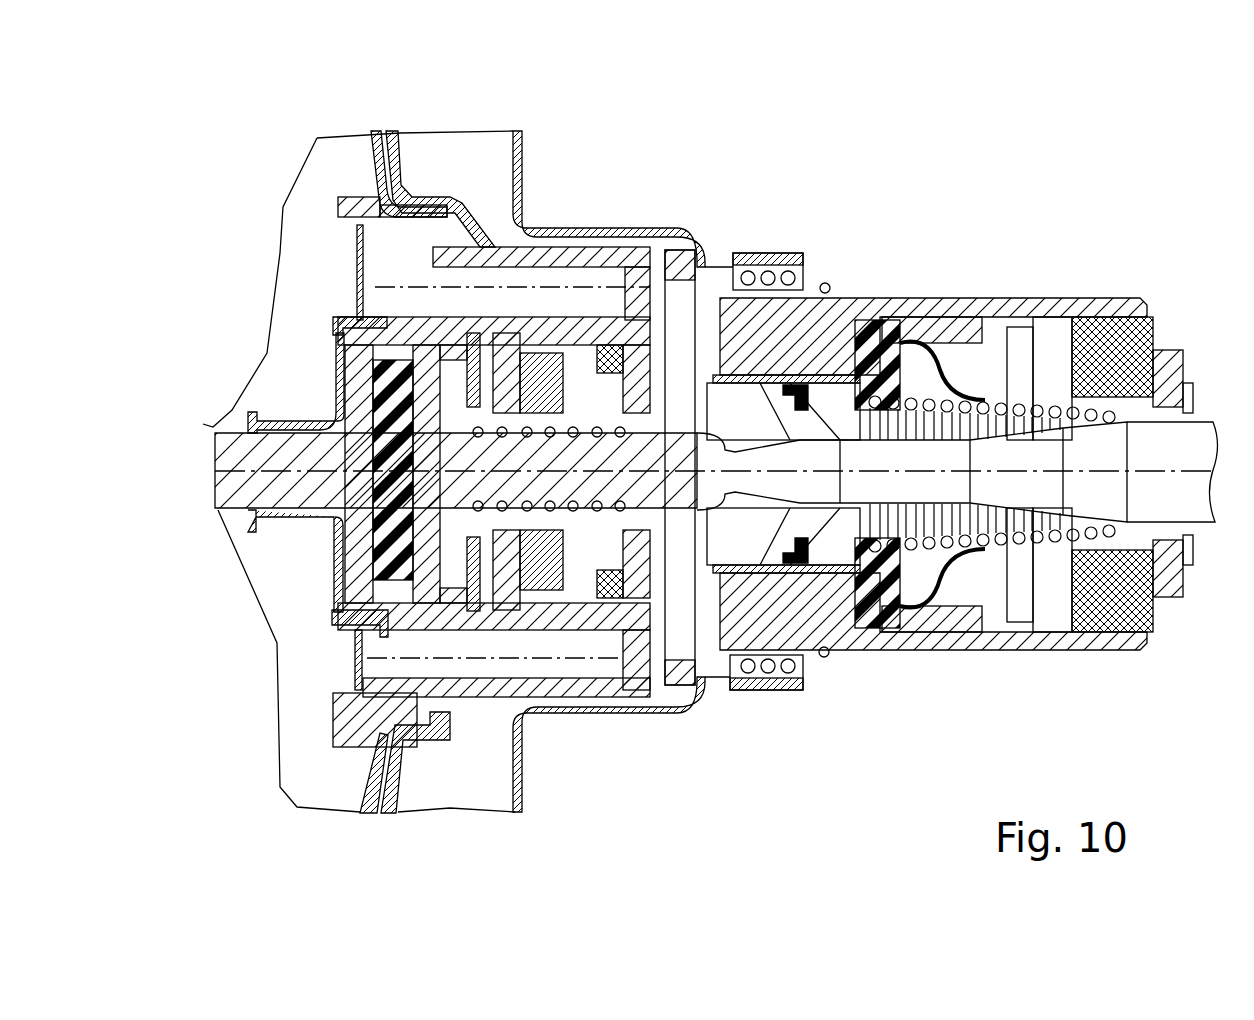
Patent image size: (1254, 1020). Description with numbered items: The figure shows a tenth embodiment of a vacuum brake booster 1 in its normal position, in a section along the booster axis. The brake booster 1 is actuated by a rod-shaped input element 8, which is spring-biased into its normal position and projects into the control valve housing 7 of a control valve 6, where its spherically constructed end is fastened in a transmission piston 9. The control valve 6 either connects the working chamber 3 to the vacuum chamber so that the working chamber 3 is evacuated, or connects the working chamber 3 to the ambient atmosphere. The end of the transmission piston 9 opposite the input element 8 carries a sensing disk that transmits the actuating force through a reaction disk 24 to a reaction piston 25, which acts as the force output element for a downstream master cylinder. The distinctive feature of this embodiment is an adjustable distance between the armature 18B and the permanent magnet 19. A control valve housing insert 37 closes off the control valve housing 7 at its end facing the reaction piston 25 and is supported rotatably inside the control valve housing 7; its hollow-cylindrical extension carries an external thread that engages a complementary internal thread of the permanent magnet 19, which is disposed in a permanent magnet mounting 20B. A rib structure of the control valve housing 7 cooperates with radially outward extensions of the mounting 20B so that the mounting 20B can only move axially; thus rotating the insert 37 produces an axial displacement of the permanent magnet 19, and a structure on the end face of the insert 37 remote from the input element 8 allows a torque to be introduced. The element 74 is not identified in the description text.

The vacuum brake booster 1 is at (752, 108).
The working chamber 3 is at (455, 148).
The control valve 6 is at (1045, 208).
The control valve housing 7 is at (1135, 300).
The input element 8 is at (1185, 458).
The transmission piston 9 is at (790, 395).
The armature 18B is at (733, 277).
The permanent magnet 19 is at (640, 367).
The permanent magnet mounting 20B is at (540, 340).
The reaction disk 24 is at (372, 487).
The reaction piston 25 is at (225, 435).
The control valve housing insert 37 is at (370, 597).
The sleeve 74 is at (613, 607).